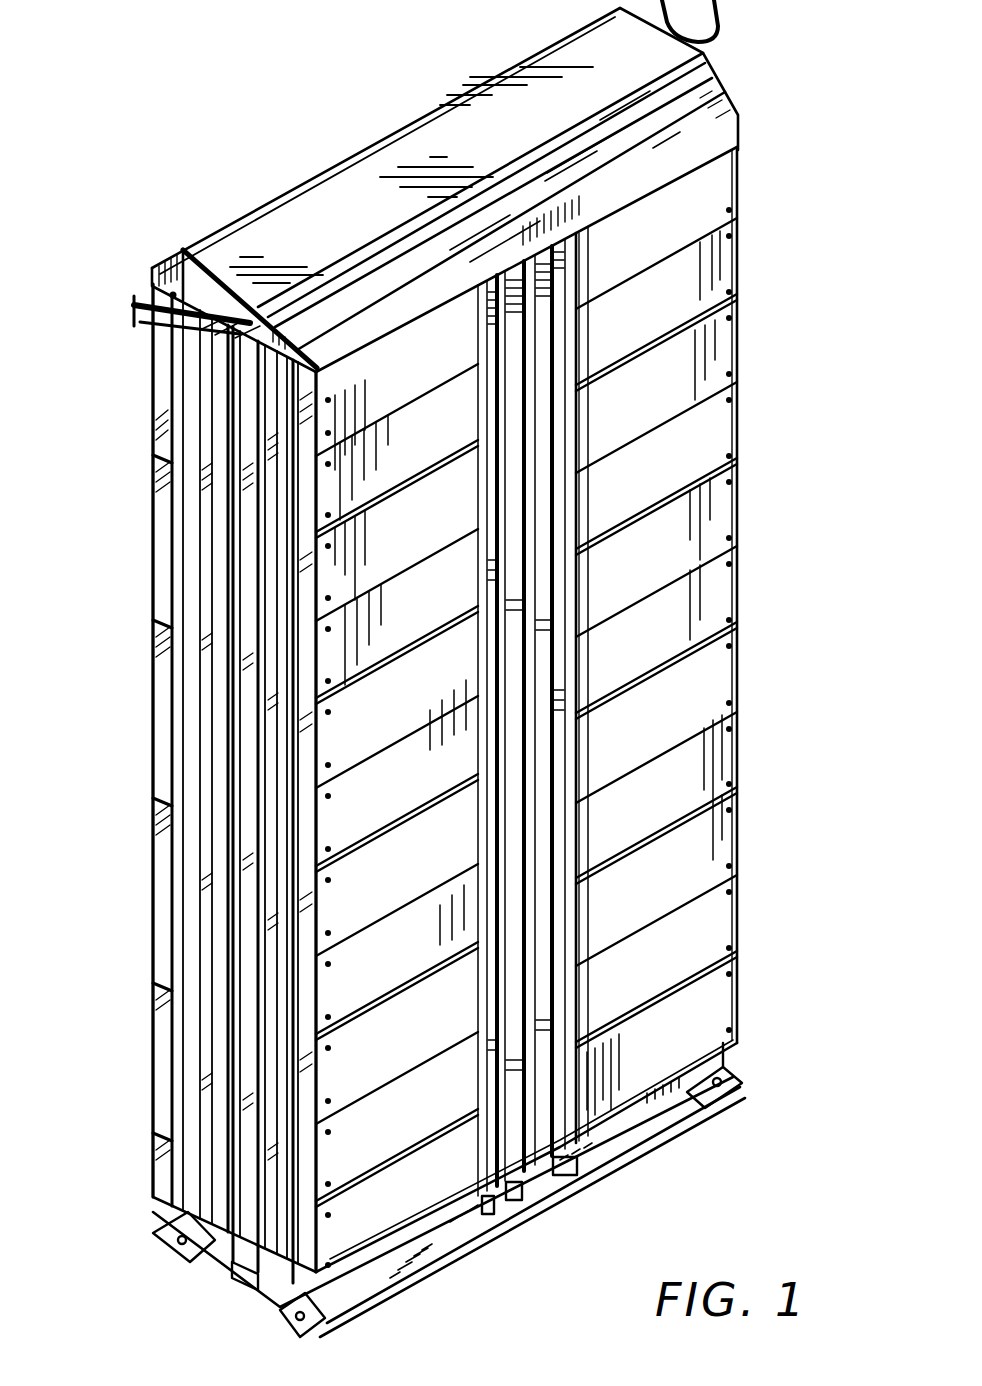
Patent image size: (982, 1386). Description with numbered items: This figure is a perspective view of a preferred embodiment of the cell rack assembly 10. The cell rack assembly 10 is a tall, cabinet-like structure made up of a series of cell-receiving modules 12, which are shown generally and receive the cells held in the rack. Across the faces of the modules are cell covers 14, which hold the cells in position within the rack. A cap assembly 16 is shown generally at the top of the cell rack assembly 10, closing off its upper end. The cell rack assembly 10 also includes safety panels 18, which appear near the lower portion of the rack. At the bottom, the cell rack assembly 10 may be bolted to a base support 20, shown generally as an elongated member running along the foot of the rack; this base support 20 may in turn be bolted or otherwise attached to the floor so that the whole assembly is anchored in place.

The cell rack assembly 10 is at (138, 182).
The cell-receiving modules 12 is at (748, 340).
The cell covers 14 is at (727, 428).
The cap assembly 16 is at (414, 109).
The safety panels 18 is at (244, 1256).
The base support 20 is at (476, 1227).